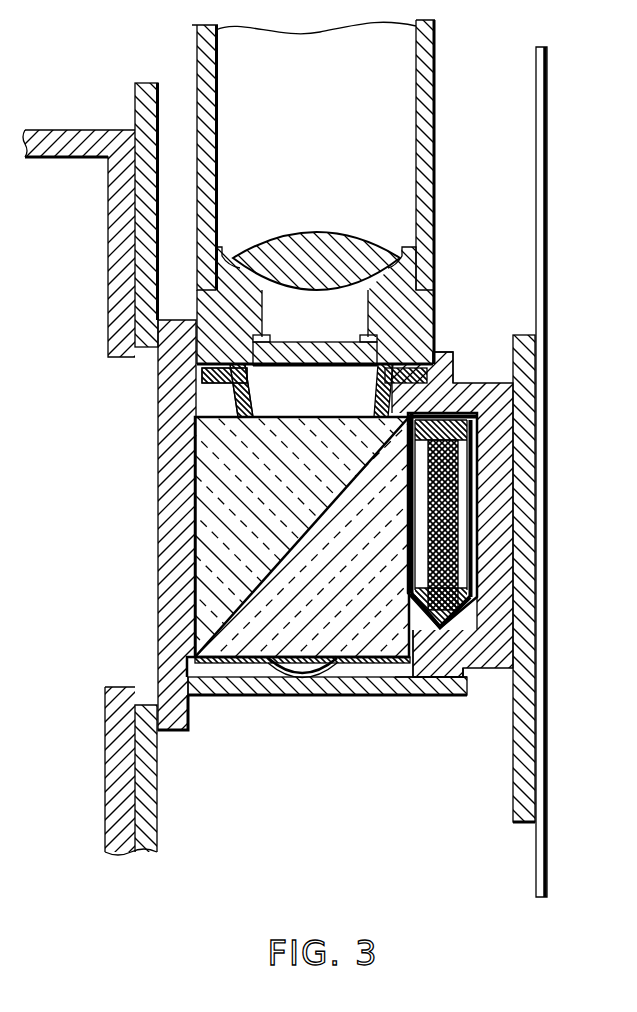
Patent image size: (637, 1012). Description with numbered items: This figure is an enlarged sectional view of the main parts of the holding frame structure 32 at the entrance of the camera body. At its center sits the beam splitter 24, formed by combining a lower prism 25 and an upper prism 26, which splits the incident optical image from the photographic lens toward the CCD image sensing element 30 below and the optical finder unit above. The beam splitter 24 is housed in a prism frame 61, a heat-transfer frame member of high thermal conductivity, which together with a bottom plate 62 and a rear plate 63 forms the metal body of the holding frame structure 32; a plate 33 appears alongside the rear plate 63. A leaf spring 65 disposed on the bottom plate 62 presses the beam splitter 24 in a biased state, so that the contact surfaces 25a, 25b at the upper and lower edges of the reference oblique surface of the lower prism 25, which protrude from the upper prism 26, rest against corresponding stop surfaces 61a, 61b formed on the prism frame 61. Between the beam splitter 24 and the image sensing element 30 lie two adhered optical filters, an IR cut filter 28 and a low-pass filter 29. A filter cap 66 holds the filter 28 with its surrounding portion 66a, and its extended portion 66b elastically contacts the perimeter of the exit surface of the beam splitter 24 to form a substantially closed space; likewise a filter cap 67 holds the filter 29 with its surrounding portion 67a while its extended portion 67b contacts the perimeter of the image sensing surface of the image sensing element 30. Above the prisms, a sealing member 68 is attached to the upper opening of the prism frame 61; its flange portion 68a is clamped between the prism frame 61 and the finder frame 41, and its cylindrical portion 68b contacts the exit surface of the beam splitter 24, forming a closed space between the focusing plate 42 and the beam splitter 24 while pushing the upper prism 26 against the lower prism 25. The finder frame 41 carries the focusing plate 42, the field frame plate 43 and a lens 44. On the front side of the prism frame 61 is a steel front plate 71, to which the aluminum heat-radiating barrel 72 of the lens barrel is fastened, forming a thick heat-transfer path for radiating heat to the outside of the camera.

The beam splitter 24 is at (98, 530).
The lower prism 25 is at (245, 622).
The contact surface 25a is at (360, 470).
The contact surface 25b is at (200, 660).
The upper prism 26 is at (205, 522).
The IR cut filter 28 is at (352, 666).
The low-pass filter 29 is at (458, 517).
The CCD image sensing element 30 is at (505, 548).
The holding frame structure 32 is at (118, 634).
The plate 33 is at (548, 244).
The finder frame 41 is at (436, 127).
The focusing plate 42 is at (318, 343).
The field frame plate 43 is at (272, 334).
The lens 44 is at (315, 232).
The prism frame 61 is at (158, 463).
The stop surface 61a is at (437, 398).
The stop surface 61b is at (187, 655).
The bottom plate 62 is at (255, 696).
The rear plate 63 is at (537, 366).
The leaf spring 65 is at (283, 664).
The filter cap 66 is at (460, 470).
The surrounding portion 66a is at (440, 690).
The extended portion 66b is at (413, 690).
The filter cap 67 is at (475, 416).
The surrounding portion 67a is at (468, 679).
The extended portion 67b is at (474, 600).
The sealing member 68 is at (393, 375).
The flange portion 68a is at (240, 375).
The cylindrical portion 68b is at (255, 412).
The front plate 71 is at (148, 83).
The heat-radiating barrel 72 is at (53, 158).